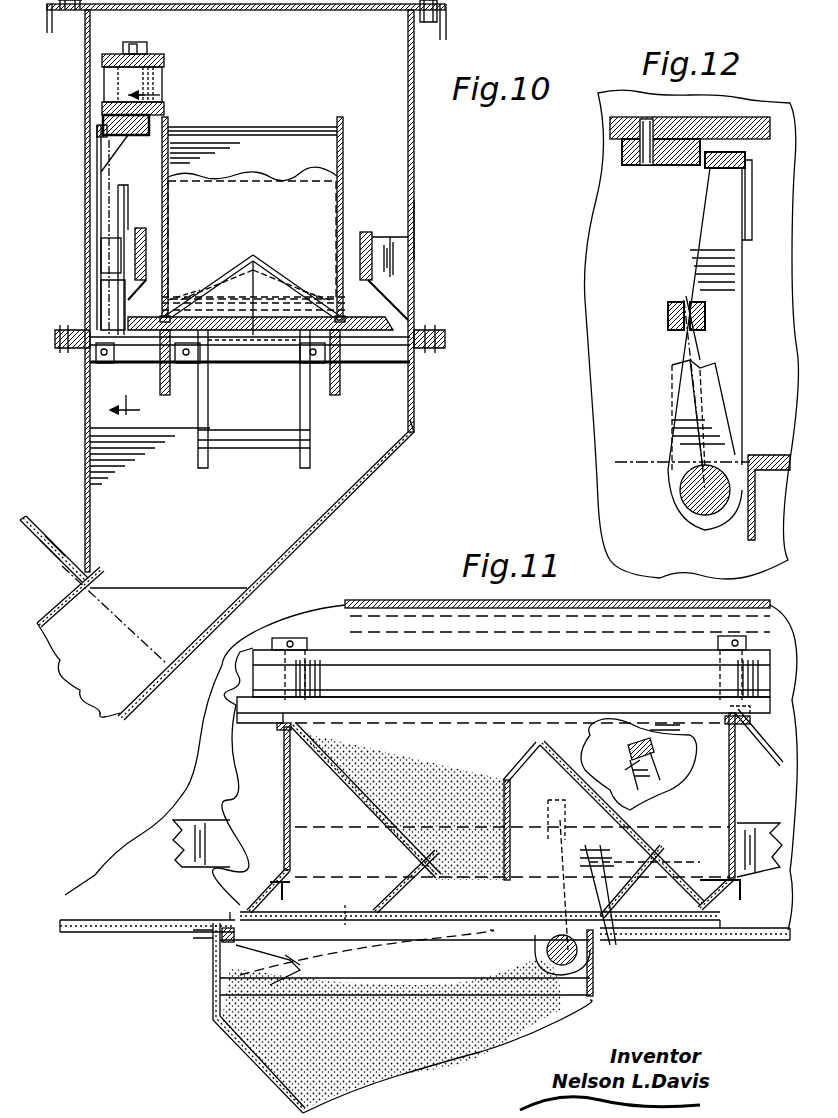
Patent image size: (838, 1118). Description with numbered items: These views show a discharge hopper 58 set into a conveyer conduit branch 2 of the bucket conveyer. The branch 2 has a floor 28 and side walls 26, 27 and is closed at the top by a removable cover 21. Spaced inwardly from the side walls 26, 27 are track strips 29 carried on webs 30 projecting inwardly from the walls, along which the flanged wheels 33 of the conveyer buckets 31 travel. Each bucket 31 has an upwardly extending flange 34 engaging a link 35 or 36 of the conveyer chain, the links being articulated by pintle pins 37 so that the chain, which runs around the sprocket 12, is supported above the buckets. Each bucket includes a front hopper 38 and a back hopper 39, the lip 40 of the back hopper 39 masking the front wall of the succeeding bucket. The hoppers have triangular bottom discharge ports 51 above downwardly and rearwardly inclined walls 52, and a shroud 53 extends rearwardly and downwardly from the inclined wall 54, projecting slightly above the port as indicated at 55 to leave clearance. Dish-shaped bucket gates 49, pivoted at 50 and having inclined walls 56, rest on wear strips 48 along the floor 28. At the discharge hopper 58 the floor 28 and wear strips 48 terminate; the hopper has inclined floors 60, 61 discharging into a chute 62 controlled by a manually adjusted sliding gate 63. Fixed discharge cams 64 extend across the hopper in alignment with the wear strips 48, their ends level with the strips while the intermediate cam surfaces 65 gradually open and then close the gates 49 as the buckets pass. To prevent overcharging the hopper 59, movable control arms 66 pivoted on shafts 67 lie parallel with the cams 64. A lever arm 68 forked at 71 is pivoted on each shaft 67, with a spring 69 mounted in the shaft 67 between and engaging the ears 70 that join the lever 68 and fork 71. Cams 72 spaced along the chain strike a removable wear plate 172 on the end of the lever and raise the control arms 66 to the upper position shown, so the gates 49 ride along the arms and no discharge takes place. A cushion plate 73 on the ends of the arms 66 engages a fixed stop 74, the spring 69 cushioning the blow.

In FIG. 10, the branch 2 is at (416, 190).
In FIG. 11, the branch 2 is at (235, 751).
In FIG. 10, the conveyer chain sprocket 12 is at (160, 95).
In FIG. 10, the removable cover 21 is at (275, 10).
In FIG. 11, the removable cover 21 is at (620, 596).
In FIG. 10, the side wall 26 is at (414, 206).
In FIG. 10, the side wall 27 is at (85, 215).
In FIG. 12, the side wall 27 is at (595, 238).
In FIG. 11, the side wall 27 is at (215, 756).
In FIG. 10, the floor 28 is at (414, 350).
In FIG. 12, the floor 28 is at (762, 449).
In FIG. 11, the floor 28 is at (110, 932).
In FIG. 10, the track strips 29 is at (140, 228).
In FIG. 11, the track strips 29 is at (200, 822).
In FIG. 10, the webs 30 is at (438, 254).
In FIG. 10, the conveyer buckets 31 is at (348, 140).
In FIG. 11, the conveyer buckets 31 is at (250, 727).
In FIG. 11, the flanged wheels 33 is at (467, 890).
In FIG. 11, the upwardly extending flanges 34 is at (240, 702).
In FIG. 10, the links 35 is at (102, 57).
In FIG. 12, the links 35 is at (610, 132).
In FIG. 11, the links 35 is at (400, 710).
In FIG. 10, the links 36 is at (108, 82).
In FIG. 11, the links 36 is at (765, 660).
In FIG. 10, the pintle pins 37 is at (135, 42).
In FIG. 11, the pintle pins 37 is at (290, 638).
In FIG. 11, the front hopper 38 is at (245, 779).
In FIG. 10, the back hopper 39 is at (325, 165).
In FIG. 11, the back hopper 39 is at (350, 758).
In FIG. 10, the lip 40 is at (280, 127).
In FIG. 11, the lip 40 is at (277, 726).
In FIG. 10, the wear strips 48 is at (385, 345).
In FIG. 11, the wear strips 48 is at (123, 920).
In FIG. 10, the bucket gates 49 is at (258, 340).
In FIG. 11, the bucket gates 49 is at (205, 920).
In FIG. 10, the pivot 50 is at (345, 300).
In FIG. 11, the pivot 50 is at (733, 903).
In FIG. 10, the triangular bottom discharge ports 51 is at (218, 283).
In FIG. 11, the triangular bottom discharge ports 51 is at (228, 880).
In FIG. 10, the inclined walls 52 is at (210, 353).
In FIG. 11, the inclined walls 52 is at (290, 898).
In FIG. 10, the shield or shroud 53 is at (240, 276).
In FIG. 11, the shield or shroud 53 is at (400, 872).
In FIG. 10, the inclined wall 54 is at (310, 200).
In FIG. 11, the inclined wall 54 is at (365, 798).
In FIG. 10, the rearward projection of shroud 55 is at (260, 266).
In FIG. 11, the rearward projection of shroud 55 is at (640, 868).
In FIG. 10, the inclined walls of gate 56 is at (393, 326).
In FIG. 11, the inclined walls of gate 56 is at (362, 938).
In FIG. 10, the discharge hoppers 58 is at (67, 655).
In FIG. 11, the discharge hoppers 58 is at (268, 1079).
In FIG. 10, the hopper 59 is at (390, 408).
In FIG. 12, the hopper 59 is at (740, 532).
In FIG. 11, the hopper 59 is at (575, 1008).
In FIG. 10, the inclined floor 60 is at (318, 527).
In FIG. 10, the inclined floor 61 is at (350, 461).
In FIG. 11, the inclined floor 61 is at (248, 1045).
In FIG. 10, the chute 62 is at (118, 662).
In FIG. 10, the sliding gate 63 is at (105, 592).
In FIG. 10, the fixed discharge cams 64 is at (160, 380).
In FIG. 11, the fixed discharge cams 64 is at (480, 995).
In FIG. 11, the cam surfaces 65 is at (336, 902).
In FIG. 10, the movable control arms 66 is at (208, 410).
In FIG. 11, the movable control arms 66 is at (250, 950).
In FIG. 10, the shafts 67 is at (275, 370).
In FIG. 12, the shafts 67 is at (700, 510).
In FIG. 11, the shafts 67 is at (575, 955).
In FIG. 10, the lever arm 68 is at (98, 181).
In FIG. 12, the lever arm 68 is at (700, 233).
In FIG. 11, the lever arm 68 is at (660, 771).
In FIG. 10, the spring 69 is at (108, 273).
In FIG. 12, the spring 69 is at (688, 345).
In FIG. 11, the spring 69 is at (560, 856).
In FIG. 10, the ears 70 is at (101, 246).
In FIG. 12, the ears 70 is at (668, 314).
In FIG. 11, the ears 70 is at (560, 850).
In FIG. 10, the fork 71 is at (127, 240).
In FIG. 12, the fork 71 is at (715, 410).
In FIG. 11, the fork 71 is at (582, 886).
In FIG. 10, the cams 72 is at (103, 128).
In FIG. 12, the cams 72 is at (628, 165).
In FIG. 11, the cams 72 is at (660, 730).
In FIG. 10, the cushion plate 73 is at (242, 452).
In FIG. 11, the cushion plate 73 is at (222, 942).
In FIG. 11, the fixed stop 74 is at (222, 935).
In FIG. 10, the removable wear plate 172 is at (98, 131).
In FIG. 12, the removable wear plate 172 is at (710, 168).
In FIG. 11, the removable wear plate 172 is at (621, 747).